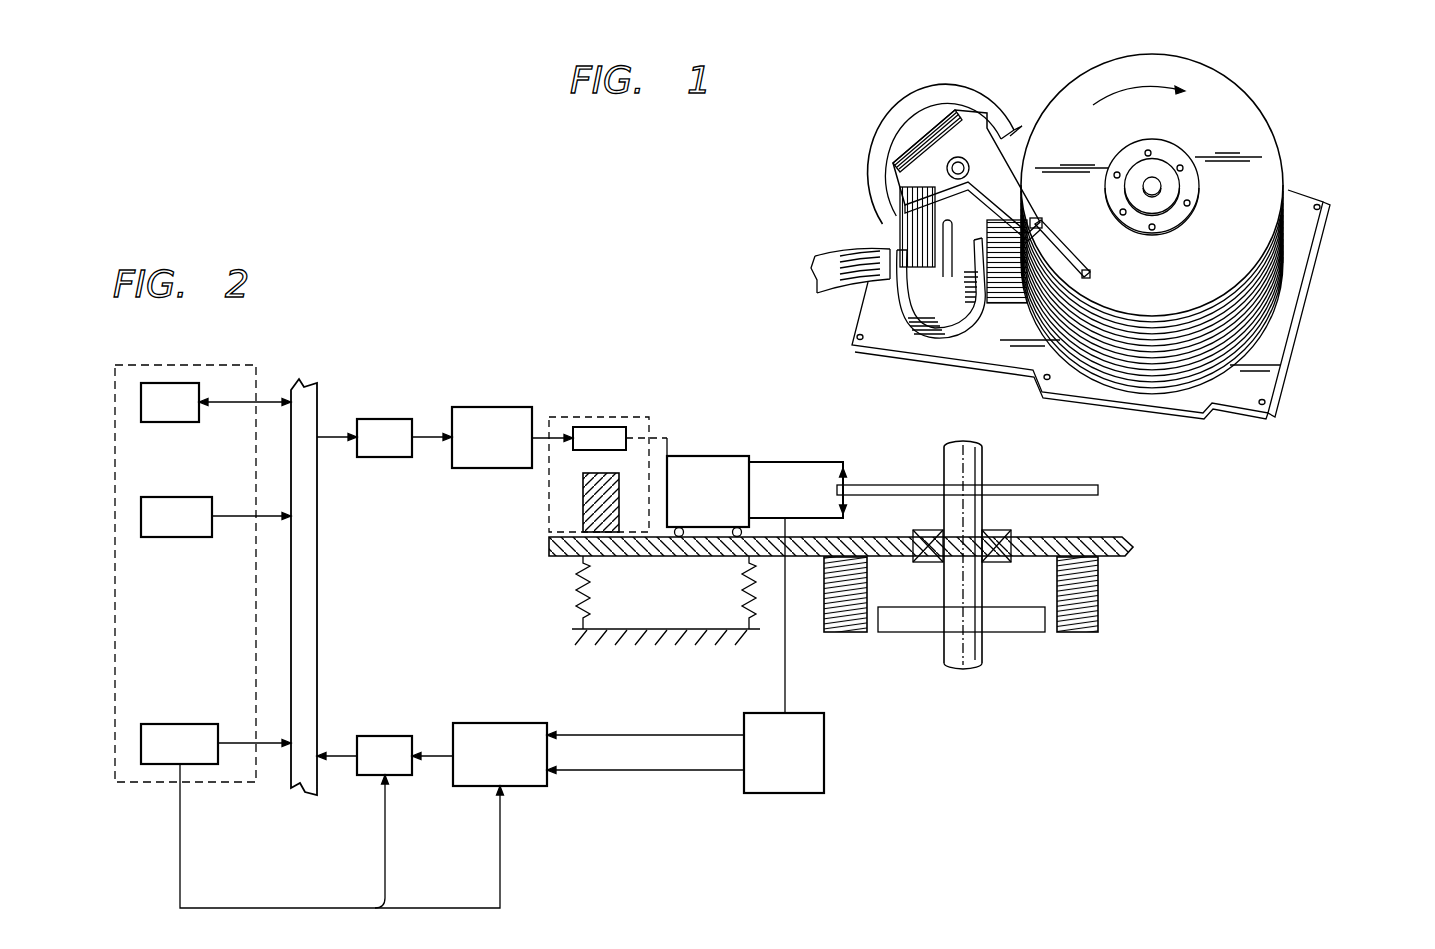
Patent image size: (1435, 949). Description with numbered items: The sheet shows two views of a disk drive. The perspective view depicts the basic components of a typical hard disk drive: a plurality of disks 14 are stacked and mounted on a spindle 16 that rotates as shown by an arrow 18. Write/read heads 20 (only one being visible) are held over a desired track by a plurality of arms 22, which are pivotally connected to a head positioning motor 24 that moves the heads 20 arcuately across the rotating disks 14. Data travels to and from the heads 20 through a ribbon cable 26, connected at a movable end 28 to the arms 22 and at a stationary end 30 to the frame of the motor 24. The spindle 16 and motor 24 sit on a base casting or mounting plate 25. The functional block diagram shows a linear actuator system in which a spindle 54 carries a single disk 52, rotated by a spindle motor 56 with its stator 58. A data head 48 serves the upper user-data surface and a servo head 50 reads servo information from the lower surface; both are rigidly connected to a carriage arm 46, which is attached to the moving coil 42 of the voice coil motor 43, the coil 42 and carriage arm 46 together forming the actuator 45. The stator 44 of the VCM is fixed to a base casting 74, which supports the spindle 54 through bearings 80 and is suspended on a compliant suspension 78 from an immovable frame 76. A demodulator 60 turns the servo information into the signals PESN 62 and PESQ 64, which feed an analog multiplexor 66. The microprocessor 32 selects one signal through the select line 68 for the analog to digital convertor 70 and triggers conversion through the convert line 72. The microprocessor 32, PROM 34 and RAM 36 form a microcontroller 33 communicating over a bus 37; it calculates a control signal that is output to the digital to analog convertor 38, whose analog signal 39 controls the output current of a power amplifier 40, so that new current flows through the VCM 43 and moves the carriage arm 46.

In FIG. 1, the disks 14 is at (1250, 338).
In FIG. 1, the spindle 16 is at (1152, 178).
In FIG. 1, the arrow 18 is at (1128, 86).
In FIG. 1, the write/read heads 20 is at (1087, 273).
In FIG. 1, the arms 22 is at (1005, 197).
In FIG. 1, the head positioning motor 24 is at (878, 150).
In FIG. 1, the base casting or mounting plate 25 is at (1335, 253).
In FIG. 1, the ribbon cable 26 is at (950, 330).
In FIG. 1, the movable end 28 is at (987, 230).
In FIG. 1, the stationary end 30 is at (830, 250).
In FIG. 2, the microprocessor 32 is at (183, 724).
In FIG. 2, the microcontroller 33 is at (215, 782).
In FIG. 2, the PROM 34 is at (175, 497).
In FIG. 2, the RAM 36 is at (170, 383).
In FIG. 2, the bus 37 is at (300, 385).
In FIG. 2, the digital to analog convertor (DAC) 38 is at (385, 419).
In FIG. 2, the analog signal 39 is at (423, 440).
In FIG. 2, the power amplifier 40 is at (495, 407).
In FIG. 2, the coil 42 is at (605, 427).
In FIG. 2, the voice coil motor (VCM) 43 is at (549, 488).
In FIG. 2, the stator 44 is at (583, 510).
In FIG. 2, the actuator 45 is at (672, 443).
In FIG. 2, the carriage arm 46 is at (715, 456).
In FIG. 2, the data head 48 is at (798, 567).
In FIG. 2, the servo head 50 is at (815, 518).
In FIG. 2, the disk 52 is at (890, 485).
In FIG. 2, the spindle 54 is at (983, 455).
In FIG. 2, the spindle motor 56 is at (1020, 632).
In FIG. 2, the stator 58 is at (1100, 597).
In FIG. 2, the demodulator 60 is at (824, 750).
In FIG. 2, the PESN 62 is at (700, 735).
In FIG. 2, the PESQ 64 is at (695, 770).
In FIG. 2, the analog multiplexor 66 is at (495, 723).
In FIG. 2, the select line 68 is at (500, 845).
In FIG. 2, the analog to digital convertor (ADC) 70 is at (380, 736).
In FIG. 2, the convert line 72 is at (385, 848).
In FIG. 2, the base casting 74 is at (549, 550).
In FIG. 2, the frame 76 is at (565, 638).
In FIG. 2, the compliant suspension 78 is at (740, 600).
In FIG. 2, the bearings 80 is at (1000, 530).